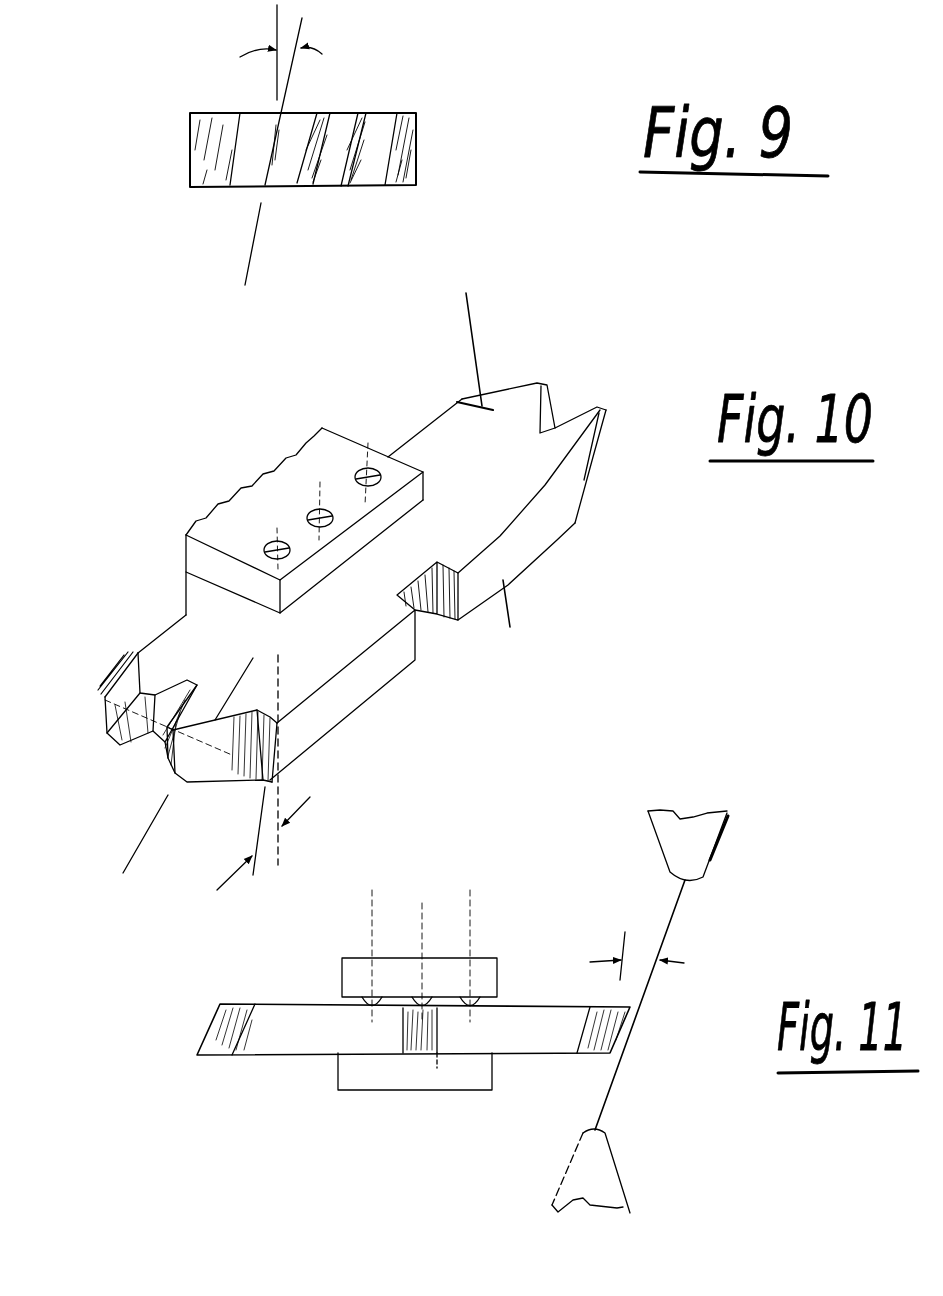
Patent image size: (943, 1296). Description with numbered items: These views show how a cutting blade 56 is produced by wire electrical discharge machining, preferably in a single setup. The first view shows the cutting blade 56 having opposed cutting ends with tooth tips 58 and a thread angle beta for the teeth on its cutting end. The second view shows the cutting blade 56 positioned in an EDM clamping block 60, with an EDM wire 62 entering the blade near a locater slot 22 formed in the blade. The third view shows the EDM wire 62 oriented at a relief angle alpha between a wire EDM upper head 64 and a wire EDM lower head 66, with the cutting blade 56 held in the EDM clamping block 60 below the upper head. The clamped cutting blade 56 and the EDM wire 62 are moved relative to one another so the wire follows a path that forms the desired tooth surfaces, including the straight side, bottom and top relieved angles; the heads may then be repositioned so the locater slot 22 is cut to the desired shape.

In FIG. 10, the locater slot 22 is at (430, 638).
In FIG. 9, the cutting blade 56 is at (418, 155).
In FIG. 10, the cutting blade 56 is at (167, 645).
In FIG. 11, the cutting blade 56 is at (275, 1015).
In FIG. 9, the tooth tips 58 is at (342, 190).
In FIG. 10, the tooth tips 58 is at (115, 743).
In FIG. 10, the EDM clamping block 60 is at (330, 452).
In FIG. 11, the EDM clamping block 60 is at (389, 1083).
In FIG. 10, the EDM wire 62 is at (471, 334).
In FIG. 11, the EDM wire 62 is at (678, 918).
In FIG. 11, the wire EDM upper head 64 is at (703, 826).
In FIG. 11, the wire EDM lower head 66 is at (597, 1175).